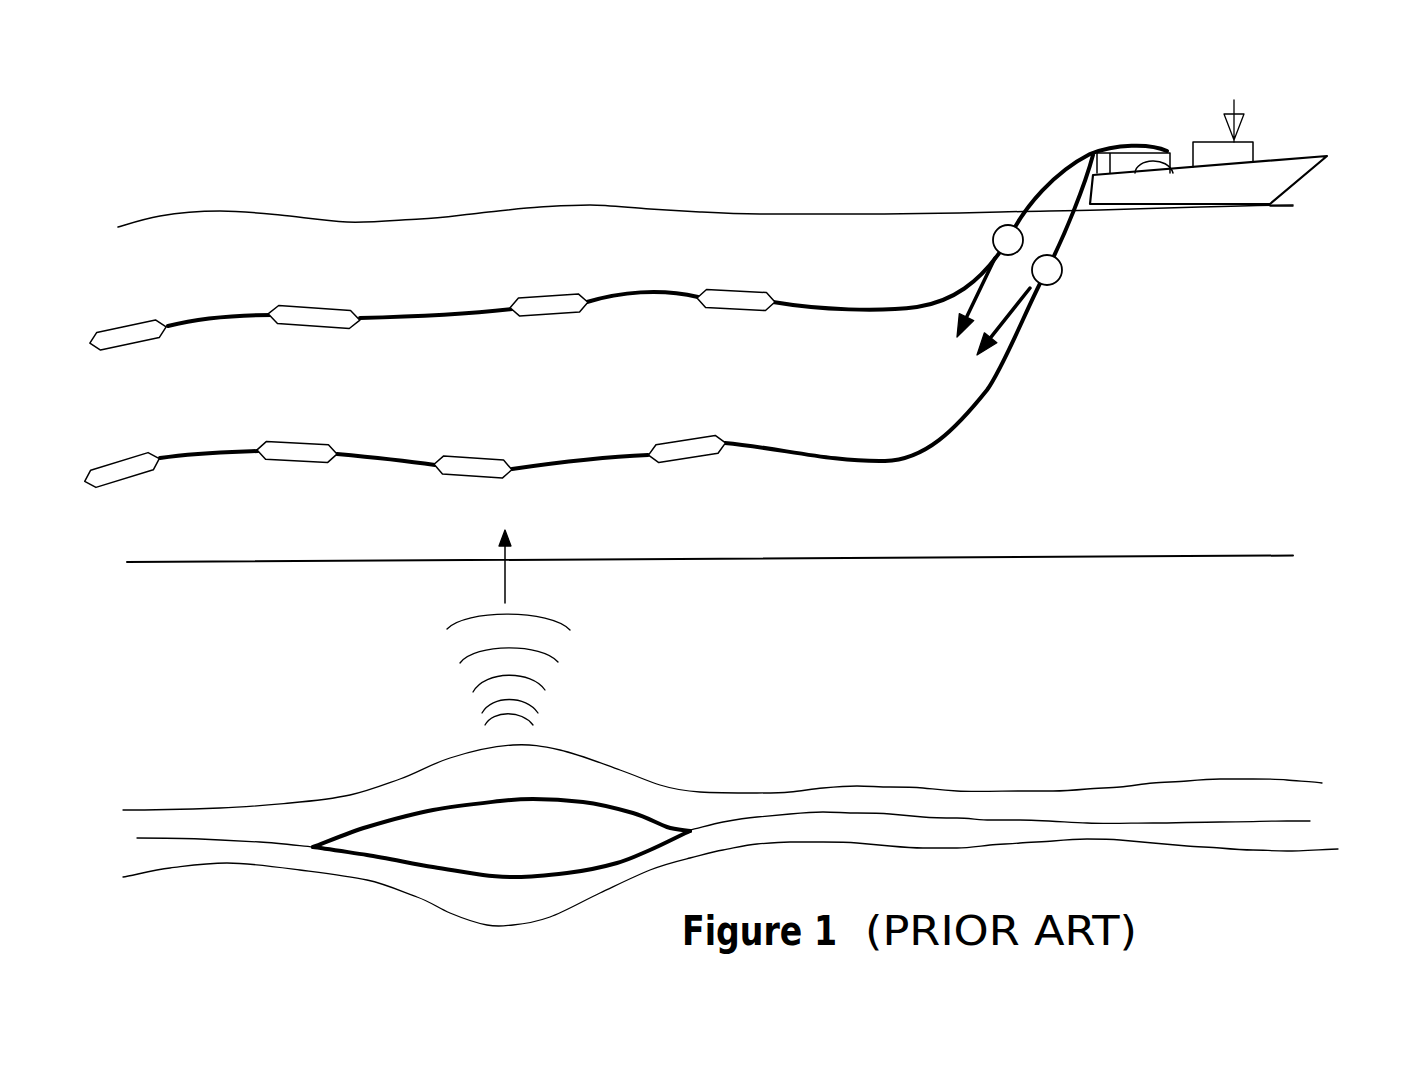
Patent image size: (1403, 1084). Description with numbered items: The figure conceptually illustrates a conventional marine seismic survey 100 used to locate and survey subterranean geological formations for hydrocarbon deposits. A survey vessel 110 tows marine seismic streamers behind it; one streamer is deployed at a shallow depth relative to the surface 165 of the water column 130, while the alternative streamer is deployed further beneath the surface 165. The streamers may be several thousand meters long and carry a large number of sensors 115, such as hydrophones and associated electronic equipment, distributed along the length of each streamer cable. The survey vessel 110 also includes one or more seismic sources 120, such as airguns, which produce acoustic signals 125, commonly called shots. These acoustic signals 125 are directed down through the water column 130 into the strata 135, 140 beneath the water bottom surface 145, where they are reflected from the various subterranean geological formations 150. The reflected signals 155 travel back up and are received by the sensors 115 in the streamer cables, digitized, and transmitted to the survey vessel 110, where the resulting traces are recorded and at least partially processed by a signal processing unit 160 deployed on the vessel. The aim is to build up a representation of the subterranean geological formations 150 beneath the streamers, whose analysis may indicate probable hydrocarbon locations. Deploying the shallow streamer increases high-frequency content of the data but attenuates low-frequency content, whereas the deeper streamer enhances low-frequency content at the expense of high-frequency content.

The marine seismic survey 100 is at (882, 96).
The survey vessel 110 is at (1293, 185).
The sensors 115 is at (128, 347).
The seismic sources 120 is at (1008, 224).
The acoustic signals 125 is at (965, 294).
The water column 130 is at (132, 417).
The strata 135 is at (513, 916).
The strata 140 is at (537, 789).
The water bottom surface 145 is at (232, 562).
The subterranean geological formations 150 is at (537, 849).
The reflected signals 155 is at (587, 696).
The signal processing unit 160 is at (1258, 152).
The surface 165 is at (577, 205).